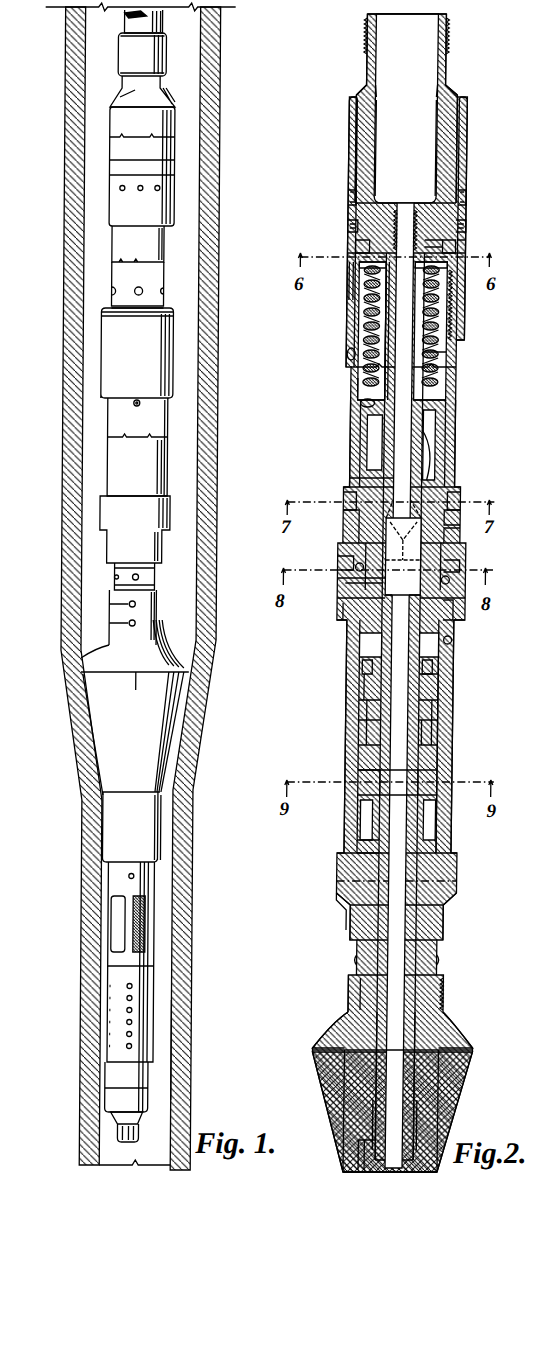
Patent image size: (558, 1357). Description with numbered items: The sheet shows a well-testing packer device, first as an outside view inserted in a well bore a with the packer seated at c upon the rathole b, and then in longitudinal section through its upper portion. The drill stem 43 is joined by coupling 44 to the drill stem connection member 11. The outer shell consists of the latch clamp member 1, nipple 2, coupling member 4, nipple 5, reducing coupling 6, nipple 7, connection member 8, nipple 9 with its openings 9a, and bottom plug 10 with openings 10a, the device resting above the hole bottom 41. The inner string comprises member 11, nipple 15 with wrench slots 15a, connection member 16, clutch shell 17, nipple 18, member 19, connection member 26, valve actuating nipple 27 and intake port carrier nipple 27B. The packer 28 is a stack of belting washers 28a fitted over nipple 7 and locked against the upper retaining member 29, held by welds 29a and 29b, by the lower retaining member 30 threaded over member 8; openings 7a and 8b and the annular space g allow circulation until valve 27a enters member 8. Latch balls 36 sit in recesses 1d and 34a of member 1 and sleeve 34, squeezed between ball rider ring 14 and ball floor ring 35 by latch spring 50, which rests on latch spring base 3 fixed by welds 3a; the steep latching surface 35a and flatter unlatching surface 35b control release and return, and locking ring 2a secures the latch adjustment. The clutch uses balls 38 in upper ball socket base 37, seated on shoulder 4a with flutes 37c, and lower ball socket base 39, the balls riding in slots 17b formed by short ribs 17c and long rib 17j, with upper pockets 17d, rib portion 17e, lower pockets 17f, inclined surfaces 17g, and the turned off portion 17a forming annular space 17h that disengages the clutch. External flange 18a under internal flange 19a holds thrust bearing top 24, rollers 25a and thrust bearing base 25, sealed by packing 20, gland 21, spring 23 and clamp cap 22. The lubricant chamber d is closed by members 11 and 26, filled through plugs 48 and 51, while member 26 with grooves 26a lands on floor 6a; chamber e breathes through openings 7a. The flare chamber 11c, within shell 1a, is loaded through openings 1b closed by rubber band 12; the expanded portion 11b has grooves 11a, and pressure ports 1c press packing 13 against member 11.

In FIG. 1, the latch clamp member 1 is at (160, 155).
In FIG. 2, the latch clamp member 1 is at (456, 246).
In FIG. 2, the flare chamber shell 1a is at (348, 146).
In FIG. 2, the openings 1b is at (468, 199).
In FIG. 1, the pressure ports 1c is at (120, 188).
In FIG. 2, the pressure ports 1c is at (350, 224).
In FIG. 2, the circular recess 1d is at (358, 246).
In FIG. 1, the nipple 2 is at (120, 248).
In FIG. 2, the nipple 2 is at (455, 387).
In FIG. 1, the locking ring 2a is at (110, 318).
In FIG. 2, the locking ring 2a is at (355, 487).
In FIG. 2, the latch spring base 3 is at (352, 400).
In FIG. 1, the welds 3a is at (168, 291).
In FIG. 2, the welds 3a is at (362, 403).
In FIG. 1, the coupling member 4 is at (163, 370).
In FIG. 2, the coupling member 4 is at (455, 550).
In FIG. 2, the internal shoulder 4a is at (370, 538).
In FIG. 2, the nipple 5 is at (449, 688).
In FIG. 1, the reducing coupling 6 is at (165, 537).
In FIG. 2, the reducing coupling 6 is at (455, 904).
In FIG. 2, the landing floor 6a is at (350, 900).
In FIG. 1, the nipple 7 is at (125, 570).
In FIG. 2, the nipple 7 is at (442, 950).
In FIG. 1, the openings 7a is at (145, 577).
In FIG. 2, the openings 7a is at (364, 958).
In FIG. 1, the connection member 8 is at (140, 928).
In FIG. 1, the openings 8b is at (132, 873).
In FIG. 1, the nipple 9 is at (155, 985).
In FIG. 1, the ports 9a is at (132, 1027).
In FIG. 1, the bottom plug 10 is at (145, 1102).
In FIG. 1, the openings 10a is at (130, 1113).
In FIG. 1, the drill stem connection member 11 is at (118, 98).
In FIG. 2, the drill stem connection member 11 is at (445, 66).
In FIG. 2, the peripheral grooves 11a is at (462, 116).
In FIG. 2, the expanded portion 11b is at (359, 92).
In FIG. 2, the annular chamber 11c is at (455, 163).
In FIG. 2, the rubber band 12 is at (350, 196).
In FIG. 2, the packing 13 is at (470, 226).
In FIG. 2, the ball rider ring 14 is at (462, 249).
In FIG. 2, the nipple 15 is at (388, 333).
In FIG. 2, the wrench slots 15a is at (413, 213).
In FIG. 2, the connection member 16 is at (440, 474).
In FIG. 2, the clutch shell 17 is at (461, 630).
In FIG. 2, the turned off portion 17a is at (455, 520).
In FIG. 2, the slots 17b is at (344, 556).
In FIG. 2, the short ribs 17c is at (352, 520).
In FIG. 2, the upper pockets 17d is at (455, 535).
In FIG. 2, the housing part 17e is at (350, 603).
In FIG. 2, the lower pockets 17f is at (344, 622).
In FIG. 2, the downwardly inclined surfaces 17g is at (455, 565).
In FIG. 2, the annular space 17h is at (349, 492).
In FIG. 2, the long rib 17j is at (470, 500).
In FIG. 1, the nipple 18 is at (118, 428).
In FIG. 2, the nipple 18 is at (425, 726).
In FIG. 2, the external flange 18a is at (365, 757).
In FIG. 2, the clutch shell member 19 is at (372, 735).
In FIG. 2, the internal flange 19a is at (446, 737).
In FIG. 2, the packing 20 is at (365, 708).
In FIG. 2, the gland 21 is at (370, 680).
In FIG. 2, the clamp cap 22 is at (446, 663).
In FIG. 2, the spring 23 is at (446, 676).
In FIG. 2, the thrust bearing top 24 is at (446, 775).
In FIG. 2, the thrust bearing base 25 is at (447, 793).
In FIG. 2, the rollers 25a is at (370, 807).
In FIG. 2, the connection member 26 is at (440, 840).
In FIG. 2, the peripheral grooves 26a is at (365, 837).
In FIG. 2, the valve actuating nipple 27 is at (420, 1030).
In FIG. 2, the valve 27a is at (418, 1120).
In FIG. 2, the intake port carrier nipple 27B is at (370, 1163).
In FIG. 1, the packer 28 is at (108, 728).
In FIG. 2, the packer 28 is at (462, 1098).
In FIG. 2, the belting washers 28a is at (345, 1109).
In FIG. 1, the upper retaining member 29 is at (195, 668).
In FIG. 2, the upper retaining member 29 is at (322, 1040).
In FIG. 1, the welds 29a is at (132, 623).
In FIG. 2, the welds 29a is at (448, 1012).
In FIG. 2, the weld 29b is at (462, 1046).
In FIG. 1, the lower retaining member 30 is at (150, 828).
In FIG. 2, the sleeve 34 is at (350, 292).
In FIG. 2, the circular recess 34a is at (362, 272).
In FIG. 2, the ball floor ring 35 is at (362, 280).
In FIG. 2, the latching angle surface 35a is at (452, 282).
In FIG. 2, the unlatching angle surface 35b is at (470, 310).
In FIG. 2, the latch balls 36 is at (452, 272).
In FIG. 2, the upper ball socket base 37 is at (360, 567).
In FIG. 2, the flutes 37c is at (456, 584).
In FIG. 2, the clutch balls 38 is at (352, 583).
In FIG. 2, the lower ball socket base 39 is at (470, 605).
In FIG. 1, the hole bottom 41 is at (142, 1143).
In FIG. 1, the drill stem 43 is at (128, 23).
In FIG. 1, the coupling 44 is at (165, 57).
In FIG. 2, the plug 48 is at (350, 354).
In FIG. 2, the latch spring 50 is at (450, 352).
In FIG. 1, the plug 51 is at (142, 403).
In FIG. 2, the plug 51 is at (458, 643).
In FIG. 1, the well bore a is at (200, 452).
In FIG. 2, the well bore a is at (347, 881).
In FIG. 1, the rathole b is at (178, 1048).
In FIG. 1, the packer seat c is at (190, 722).
In FIG. 2, the latch and clutch chamber d is at (440, 443).
In FIG. 2, the chamber e is at (372, 641).
In FIG. 2, the annular space g is at (372, 1005).